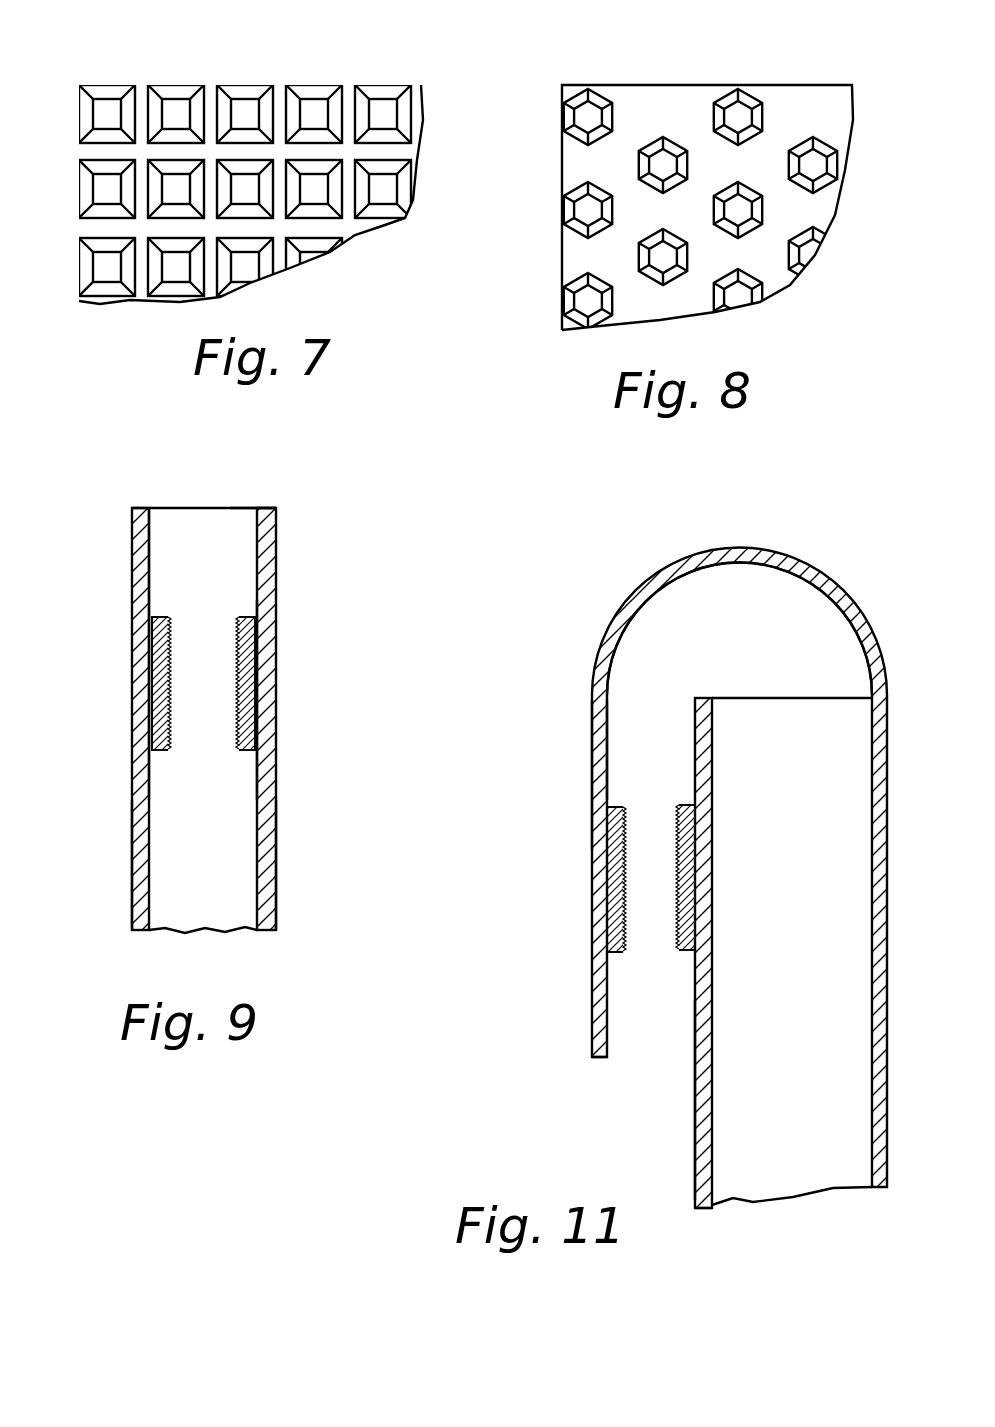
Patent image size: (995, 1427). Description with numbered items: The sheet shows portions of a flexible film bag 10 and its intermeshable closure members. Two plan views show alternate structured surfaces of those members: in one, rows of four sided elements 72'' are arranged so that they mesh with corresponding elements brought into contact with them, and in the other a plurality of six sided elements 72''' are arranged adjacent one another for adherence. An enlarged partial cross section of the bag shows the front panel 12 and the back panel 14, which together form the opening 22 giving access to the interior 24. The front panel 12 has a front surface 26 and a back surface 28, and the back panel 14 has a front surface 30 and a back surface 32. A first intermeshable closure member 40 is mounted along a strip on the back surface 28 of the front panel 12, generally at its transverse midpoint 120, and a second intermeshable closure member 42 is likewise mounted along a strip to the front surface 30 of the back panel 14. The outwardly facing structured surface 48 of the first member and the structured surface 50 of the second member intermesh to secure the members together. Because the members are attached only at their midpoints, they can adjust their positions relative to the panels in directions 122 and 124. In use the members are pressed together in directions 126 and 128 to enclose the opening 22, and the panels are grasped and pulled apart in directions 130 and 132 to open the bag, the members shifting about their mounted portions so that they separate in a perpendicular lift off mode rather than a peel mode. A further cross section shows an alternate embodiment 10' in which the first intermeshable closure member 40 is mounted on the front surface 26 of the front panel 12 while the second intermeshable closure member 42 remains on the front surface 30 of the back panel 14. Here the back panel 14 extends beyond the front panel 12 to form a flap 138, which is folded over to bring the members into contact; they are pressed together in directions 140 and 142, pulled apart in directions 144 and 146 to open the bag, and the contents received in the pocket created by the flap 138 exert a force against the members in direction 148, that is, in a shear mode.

In FIG. 9, the bag 10 is at (375, 492).
In FIG. 11, the alternate embodiment of the bag 10' is at (551, 590).
In FIG. 9, the front panel 12 is at (272, 876).
In FIG. 11, the front panel 12 is at (695, 1152).
In FIG. 9, the back panel 14 is at (140, 850).
In FIG. 11, the back panel 14 is at (592, 703).
In FIG. 9, the opening 22 is at (193, 505).
In FIG. 11, the opening 22 is at (652, 736).
In FIG. 9, the interior 24 is at (228, 838).
In FIG. 11, the interior 24 is at (802, 1185).
In FIG. 9, the front surface of front panel 26 is at (280, 906).
In FIG. 11, the front surface of front panel 26 is at (695, 1125).
In FIG. 9, the back surface of front panel 28 is at (248, 513).
In FIG. 11, the back surface of front panel 28 is at (708, 1184).
In FIG. 9, the front surface of back panel 30 is at (150, 537).
In FIG. 11, the front surface of back panel 30 is at (604, 755).
In FIG. 9, the back surface of back panel 32 is at (130, 882).
In FIG. 11, the back surface of back panel 32 is at (592, 808).
In FIG. 9, the first intermeshable closure member 40 is at (245, 641).
In FIG. 11, the first intermeshable closure member 40 is at (690, 830).
In FIG. 9, the second intermeshable closure member 42 is at (150, 750).
In FIG. 11, the second intermeshable closure member 42 is at (610, 957).
In FIG. 9, the structured surface 48 is at (240, 622).
In FIG. 11, the structured surface 48 is at (695, 945).
In FIG. 9, the structured surface 50 is at (150, 732).
In FIG. 11, the structured surface 50 is at (600, 935).
In FIG. 7, the four sided elements 72'' is at (251, 197).
In FIG. 8, the six sided elements 72''' is at (707, 171).
In FIG. 9, the transverse midpoint 120 is at (150, 683).
In FIG. 9, the direction 122 is at (168, 602).
In FIG. 9, the direction 124 is at (245, 585).
In FIG. 9, the direction 126 is at (292, 675).
In FIG. 9, the direction 128 is at (105, 677).
In FIG. 9, the direction 130 is at (292, 688).
In FIG. 9, the direction 132 is at (105, 692).
In FIG. 11, the flap 138 is at (592, 1043).
In FIG. 11, the direction 140 is at (733, 870).
In FIG. 11, the direction 142 is at (560, 872).
In FIG. 11, the direction 144 is at (733, 890).
In FIG. 11, the direction 146 is at (557, 892).
In FIG. 11, the direction 148 is at (648, 997).